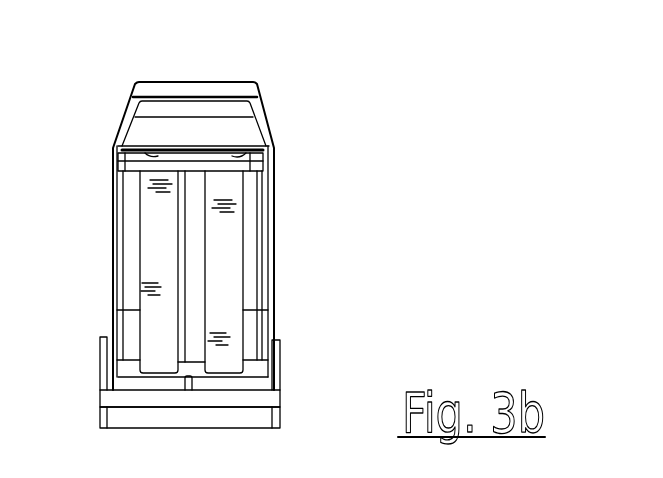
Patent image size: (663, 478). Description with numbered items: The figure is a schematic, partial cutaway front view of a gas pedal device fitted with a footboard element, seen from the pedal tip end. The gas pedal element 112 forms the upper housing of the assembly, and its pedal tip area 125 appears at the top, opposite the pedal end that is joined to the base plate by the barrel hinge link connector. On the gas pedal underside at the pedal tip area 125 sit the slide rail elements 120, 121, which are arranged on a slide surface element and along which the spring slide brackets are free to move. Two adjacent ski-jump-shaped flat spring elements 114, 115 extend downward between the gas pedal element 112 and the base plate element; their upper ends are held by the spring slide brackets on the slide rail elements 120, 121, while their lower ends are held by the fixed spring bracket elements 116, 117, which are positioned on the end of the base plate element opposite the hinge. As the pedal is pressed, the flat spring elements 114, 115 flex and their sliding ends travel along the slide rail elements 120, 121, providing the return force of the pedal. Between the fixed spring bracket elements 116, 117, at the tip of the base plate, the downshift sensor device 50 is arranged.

The gas pedal element 112 is at (207, 83).
The pedal tip area 125 is at (163, 110).
The slide rail element 121 is at (137, 153).
The slide rail element 120 is at (262, 152).
The ski-jump-shaped flat spring element 115 is at (140, 262).
The ski-jump-shaped flat spring element 114 is at (228, 252).
The fixed spring bracket element 117 is at (150, 382).
The fixed spring bracket element 116 is at (227, 382).
The downshift sensor device 50 is at (190, 384).